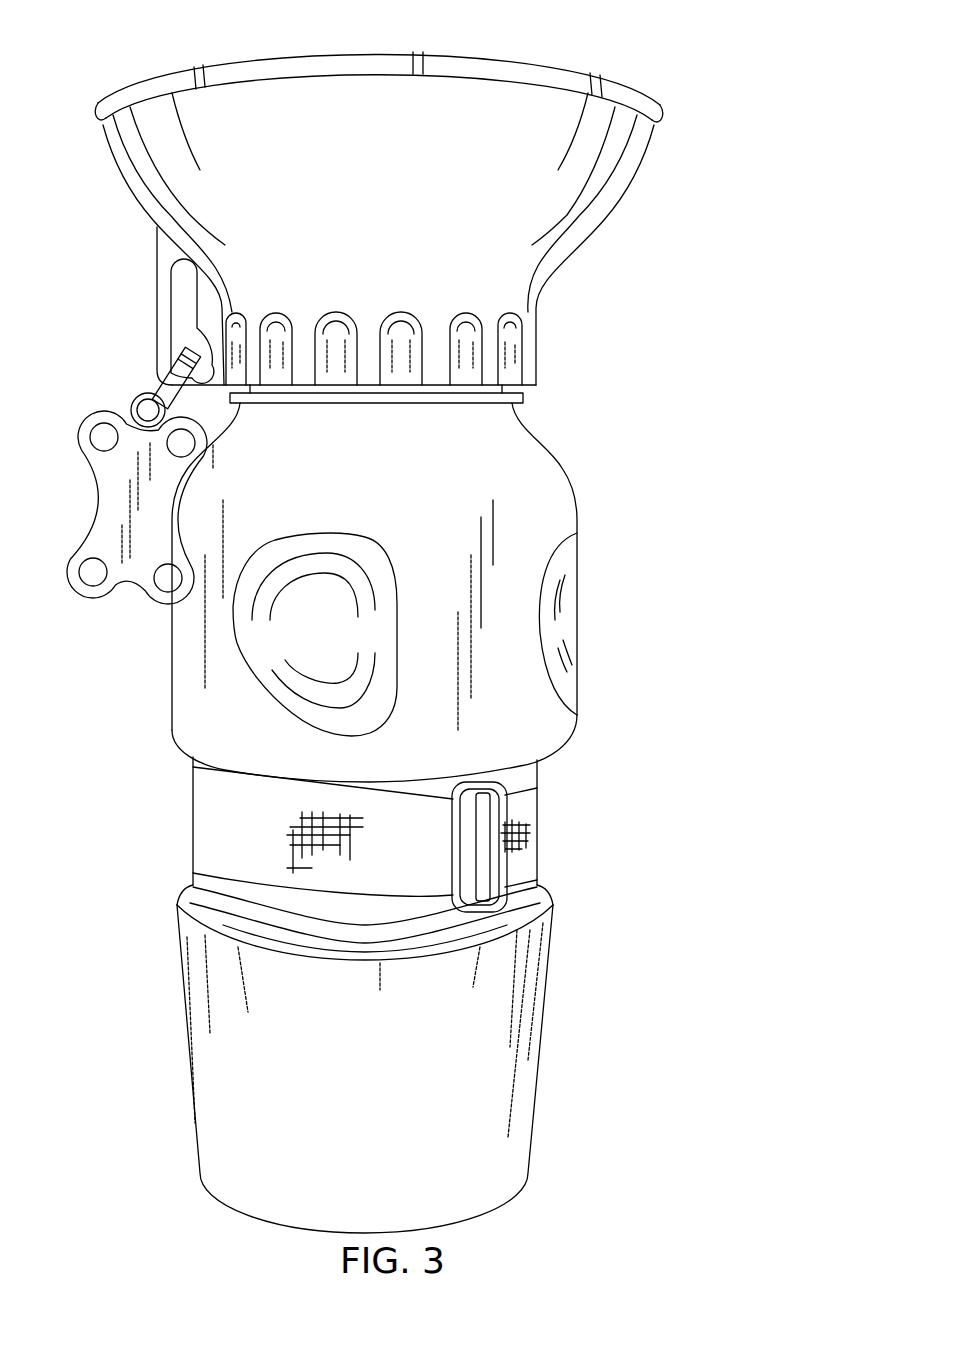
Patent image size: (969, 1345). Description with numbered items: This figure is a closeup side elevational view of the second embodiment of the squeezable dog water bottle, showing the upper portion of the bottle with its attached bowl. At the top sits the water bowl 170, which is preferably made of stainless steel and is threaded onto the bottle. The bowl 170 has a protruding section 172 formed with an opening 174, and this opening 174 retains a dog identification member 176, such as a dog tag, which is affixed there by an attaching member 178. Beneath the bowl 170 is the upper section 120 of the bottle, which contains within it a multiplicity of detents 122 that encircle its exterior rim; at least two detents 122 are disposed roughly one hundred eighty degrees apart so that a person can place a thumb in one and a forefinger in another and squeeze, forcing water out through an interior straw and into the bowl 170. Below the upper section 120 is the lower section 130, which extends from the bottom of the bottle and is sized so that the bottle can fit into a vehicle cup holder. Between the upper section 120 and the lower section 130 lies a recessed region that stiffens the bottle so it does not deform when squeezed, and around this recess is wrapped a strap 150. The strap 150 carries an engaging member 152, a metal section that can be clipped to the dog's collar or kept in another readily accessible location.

The water bowl 170 is at (581, 232).
The protruding section 172 is at (165, 262).
The opening 174 is at (175, 311).
The dog identification member 176 is at (113, 505).
The attaching member 178 is at (154, 378).
The upper section 120 is at (548, 494).
The detent 122 is at (557, 735).
The strap 150 is at (545, 833).
The engaging member 152 is at (543, 892).
The lower section 130 is at (523, 1073).